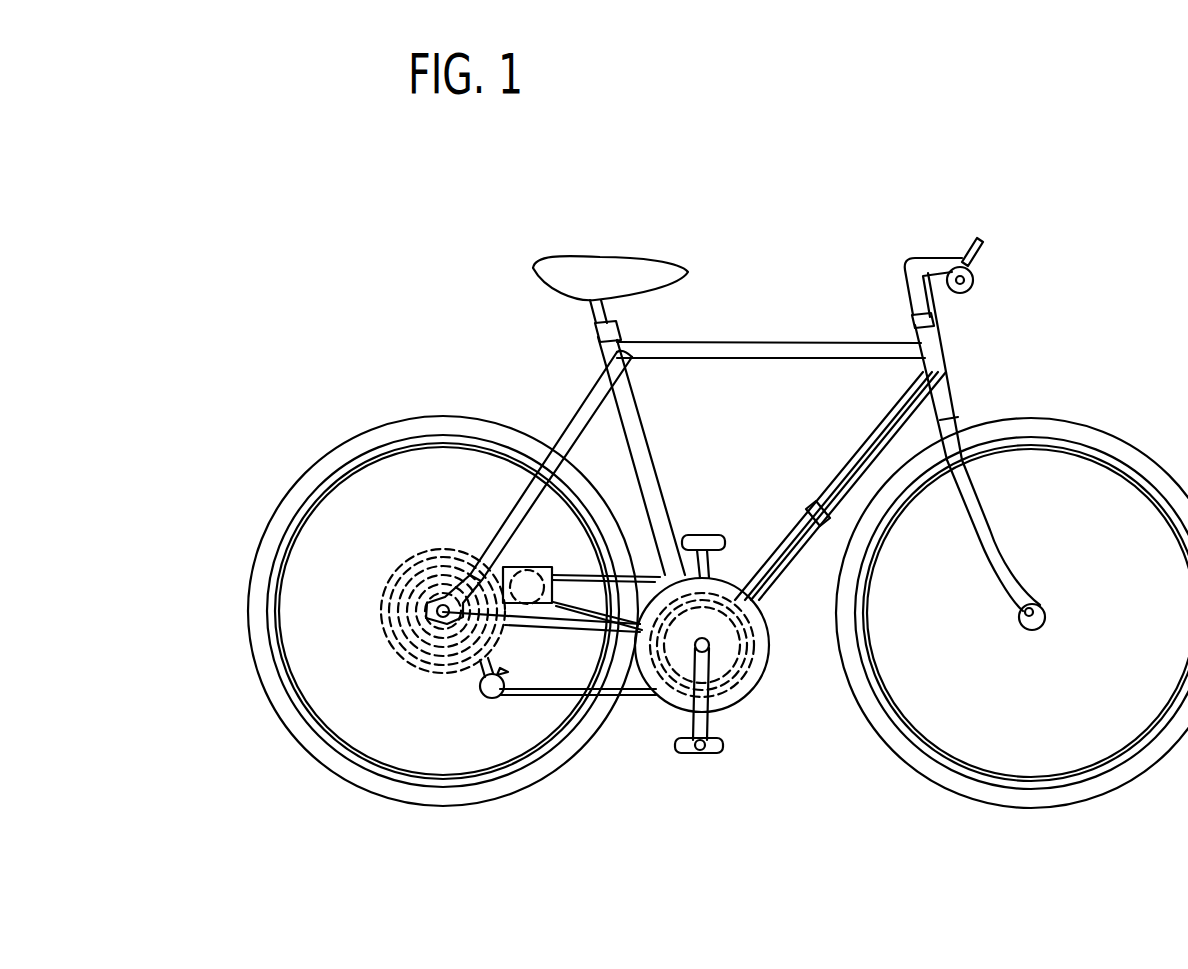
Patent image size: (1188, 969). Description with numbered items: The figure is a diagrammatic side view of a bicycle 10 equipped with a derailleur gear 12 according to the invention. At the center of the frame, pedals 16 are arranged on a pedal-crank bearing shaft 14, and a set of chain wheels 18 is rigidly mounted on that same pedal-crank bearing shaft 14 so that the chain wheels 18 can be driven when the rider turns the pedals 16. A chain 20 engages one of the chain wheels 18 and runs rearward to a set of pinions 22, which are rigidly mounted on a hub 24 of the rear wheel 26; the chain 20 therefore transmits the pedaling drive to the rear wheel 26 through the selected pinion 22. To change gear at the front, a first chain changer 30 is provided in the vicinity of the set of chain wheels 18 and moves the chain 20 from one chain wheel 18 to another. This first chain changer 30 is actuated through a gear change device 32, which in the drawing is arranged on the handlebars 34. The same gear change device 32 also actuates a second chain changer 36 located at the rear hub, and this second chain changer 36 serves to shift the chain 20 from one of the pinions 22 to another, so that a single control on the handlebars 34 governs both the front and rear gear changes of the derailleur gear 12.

The bicycle 10 is at (1090, 200).
The derailleur gear 12 is at (436, 589).
The pedal-crank bearing shaft 14 is at (707, 648).
The pedals 16 is at (700, 720).
The chain wheels 18 is at (738, 712).
The chain 20 is at (568, 692).
The pinions 22 is at (385, 580).
The hub 24 is at (437, 613).
The rear wheel 26 is at (345, 752).
The first chain changer 30 is at (725, 611).
The gear change device 32 is at (978, 272).
The handlebars 34 is at (957, 293).
The second chain changer 36 is at (523, 565).